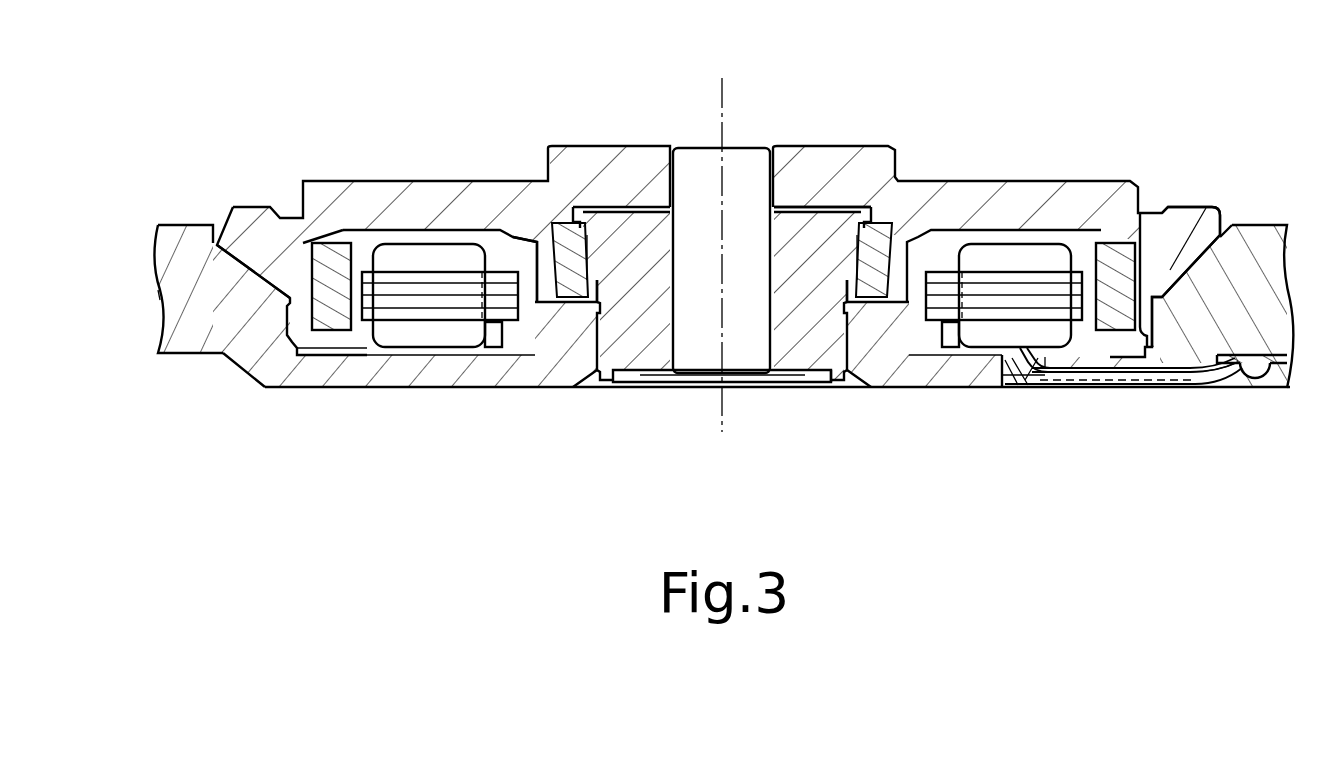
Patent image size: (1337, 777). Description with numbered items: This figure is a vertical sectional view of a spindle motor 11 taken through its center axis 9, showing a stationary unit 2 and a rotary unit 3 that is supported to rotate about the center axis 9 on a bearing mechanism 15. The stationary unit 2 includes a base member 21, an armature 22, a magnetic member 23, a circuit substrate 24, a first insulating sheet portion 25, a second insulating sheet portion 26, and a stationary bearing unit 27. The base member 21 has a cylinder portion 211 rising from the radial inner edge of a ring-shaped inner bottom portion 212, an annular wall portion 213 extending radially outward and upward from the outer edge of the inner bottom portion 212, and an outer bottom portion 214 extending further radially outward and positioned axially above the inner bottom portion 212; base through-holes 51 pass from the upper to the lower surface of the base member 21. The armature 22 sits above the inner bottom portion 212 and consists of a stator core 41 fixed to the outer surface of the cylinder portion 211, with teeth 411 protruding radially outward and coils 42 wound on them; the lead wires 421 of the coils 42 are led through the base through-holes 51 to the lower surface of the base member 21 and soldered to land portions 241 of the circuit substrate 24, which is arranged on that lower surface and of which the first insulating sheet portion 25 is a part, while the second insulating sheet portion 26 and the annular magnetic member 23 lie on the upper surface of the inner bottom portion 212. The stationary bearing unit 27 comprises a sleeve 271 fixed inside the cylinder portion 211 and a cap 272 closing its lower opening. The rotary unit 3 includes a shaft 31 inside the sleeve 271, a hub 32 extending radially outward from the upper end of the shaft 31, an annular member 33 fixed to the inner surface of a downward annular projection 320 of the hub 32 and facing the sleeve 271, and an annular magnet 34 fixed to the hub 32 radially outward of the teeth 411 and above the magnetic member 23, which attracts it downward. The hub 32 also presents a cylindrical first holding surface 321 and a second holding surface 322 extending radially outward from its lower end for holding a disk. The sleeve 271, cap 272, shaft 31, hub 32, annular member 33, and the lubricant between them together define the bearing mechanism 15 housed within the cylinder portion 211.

The stationary unit 2 is at (207, 372).
The rotary unit 3 is at (852, 120).
The center axis 9 is at (722, 97).
The spindle motor 11 is at (405, 133).
The bearing mechanism 15 is at (778, 392).
The base member 21 is at (445, 393).
The armature 22 is at (722, 217).
The magnetic member 23 is at (1118, 360).
The circuit substrate 24 is at (1290, 375).
The first insulating sheet portion 25 is at (1070, 375).
The second insulating sheet portion 26 is at (990, 360).
The stationary bearing unit 27 is at (720, 434).
The shaft 31 is at (747, 170).
The hub 32 is at (598, 166).
The annular member 33 is at (563, 237).
The magnet 34 is at (1110, 273).
The stator core 41 is at (950, 258).
The coils 42 is at (997, 257).
The base through-holes 51 is at (1025, 385).
The cylinder portion 211 is at (567, 337).
The inner bottom portion 212 is at (350, 377).
The annular wall portion 213 is at (258, 338).
The outer bottom portion 214 is at (183, 298).
The land portions 241 is at (1252, 367).
The sleeve 271 is at (632, 385).
The cap 272 is at (722, 415).
The annular projection 320 is at (548, 257).
The first holding surface 321 is at (1140, 197).
The second holding surface 322 is at (1190, 207).
The teeth 411 is at (1040, 293).
The lead wires 421 is at (1200, 380).